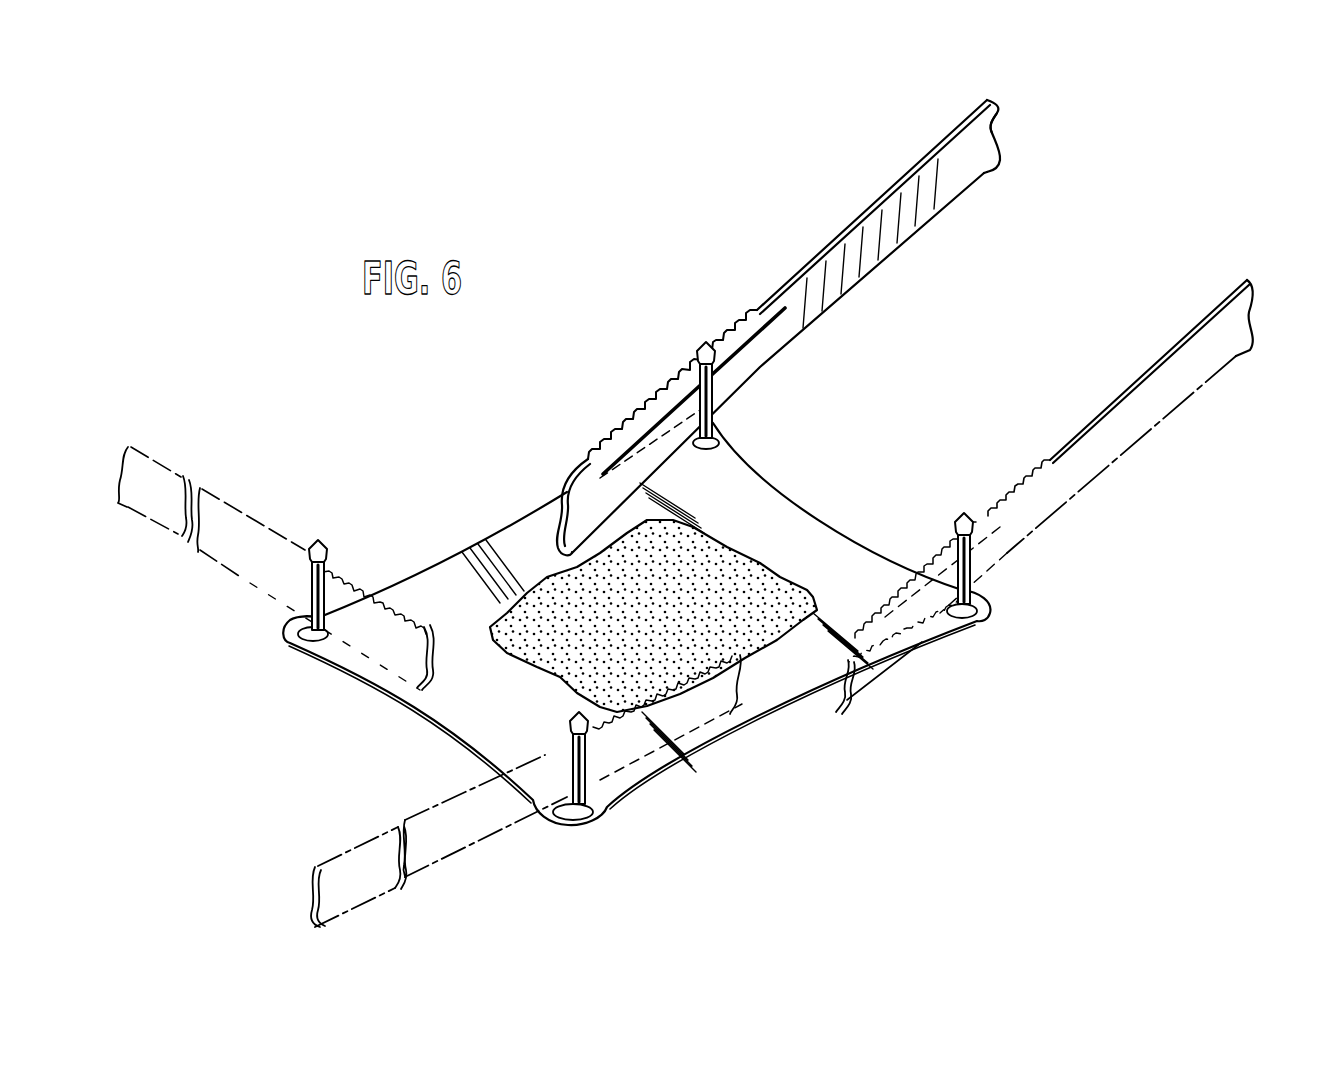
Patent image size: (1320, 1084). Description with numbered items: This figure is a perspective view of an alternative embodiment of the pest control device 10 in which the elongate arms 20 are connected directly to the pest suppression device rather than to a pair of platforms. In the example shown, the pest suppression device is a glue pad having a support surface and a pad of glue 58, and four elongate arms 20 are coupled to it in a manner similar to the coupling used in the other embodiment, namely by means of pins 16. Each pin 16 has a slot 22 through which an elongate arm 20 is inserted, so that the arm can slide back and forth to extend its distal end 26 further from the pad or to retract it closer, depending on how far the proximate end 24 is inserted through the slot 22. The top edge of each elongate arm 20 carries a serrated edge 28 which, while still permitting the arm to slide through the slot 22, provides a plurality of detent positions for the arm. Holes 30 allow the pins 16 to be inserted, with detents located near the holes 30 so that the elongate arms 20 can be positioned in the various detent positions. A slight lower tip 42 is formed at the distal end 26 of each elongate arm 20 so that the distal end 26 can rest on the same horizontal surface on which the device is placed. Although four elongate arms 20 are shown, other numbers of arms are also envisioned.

The pest control device 10 is at (707, 748).
The pin 16 is at (714, 415).
The elongate arm 20 is at (883, 200).
The slot 22 is at (712, 396).
The proximate end 24 is at (556, 510).
The distal end 26 is at (997, 128).
The serrated edge 28 is at (730, 337).
The hole 30 is at (717, 450).
The lower tip 42 is at (988, 174).
The pad of glue 58 is at (727, 550).